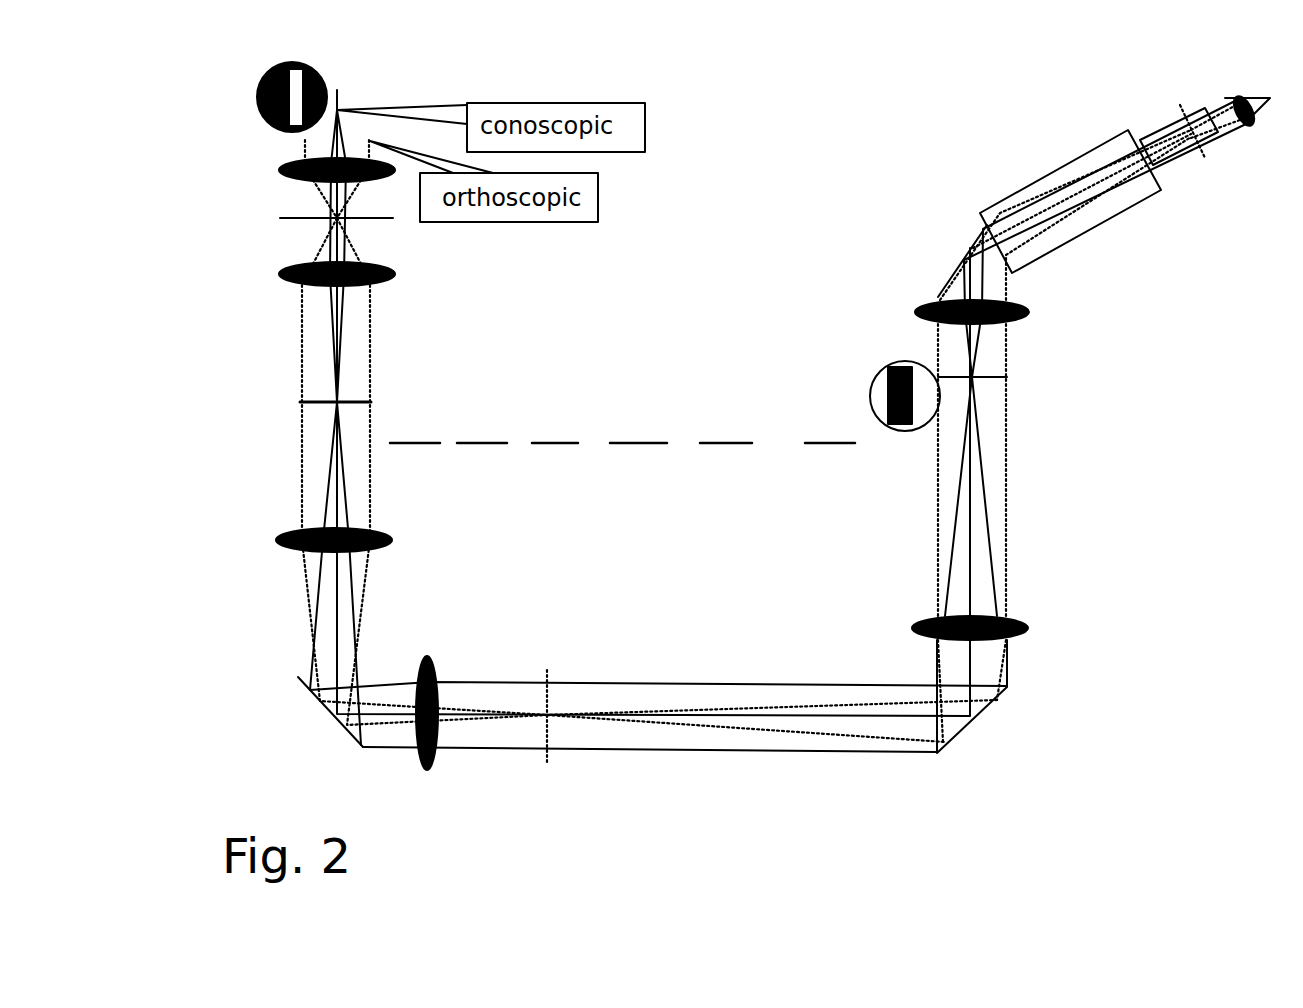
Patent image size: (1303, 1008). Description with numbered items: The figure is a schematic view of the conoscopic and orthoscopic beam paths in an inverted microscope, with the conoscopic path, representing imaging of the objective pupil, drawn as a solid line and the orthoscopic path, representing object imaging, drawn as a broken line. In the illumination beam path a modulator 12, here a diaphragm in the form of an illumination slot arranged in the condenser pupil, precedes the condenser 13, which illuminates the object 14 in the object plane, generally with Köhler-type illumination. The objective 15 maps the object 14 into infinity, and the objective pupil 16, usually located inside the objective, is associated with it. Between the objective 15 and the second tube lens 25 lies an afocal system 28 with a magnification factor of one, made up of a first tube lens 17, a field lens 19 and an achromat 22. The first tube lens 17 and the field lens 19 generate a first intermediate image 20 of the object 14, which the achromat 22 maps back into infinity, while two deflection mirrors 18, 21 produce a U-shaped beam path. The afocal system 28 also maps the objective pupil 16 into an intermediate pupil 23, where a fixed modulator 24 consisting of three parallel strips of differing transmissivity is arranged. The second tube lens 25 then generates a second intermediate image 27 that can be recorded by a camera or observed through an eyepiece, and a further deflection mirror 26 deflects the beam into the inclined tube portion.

The modulator 12 is at (262, 74).
The condenser 13 is at (278, 177).
The object 14 is at (323, 220).
The objective 15 is at (288, 285).
The objective pupil 16 is at (300, 402).
The first tube lens 17 is at (275, 552).
The first deflection mirror 18 is at (342, 733).
The field lens 19 is at (438, 663).
The first intermediate image 20 is at (550, 675).
The second deflection mirror 21 is at (988, 712).
The achromat 22 is at (1040, 627).
The intermediate pupil 23 is at (1010, 377).
The modulator 24 is at (880, 362).
The second tube lens 25 is at (1033, 313).
The further deflection mirror 26 is at (965, 247).
The second intermediate image 27 is at (1183, 105).
The afocal system 28 is at (682, 515).